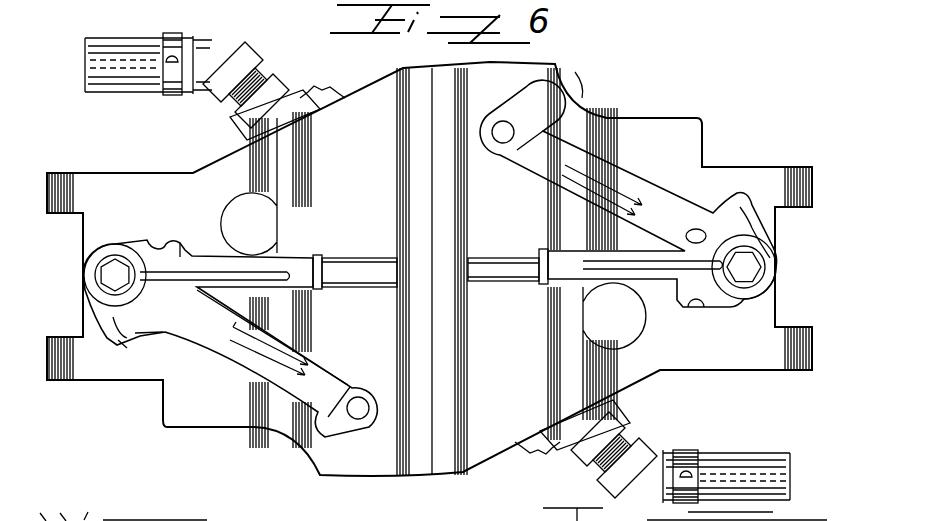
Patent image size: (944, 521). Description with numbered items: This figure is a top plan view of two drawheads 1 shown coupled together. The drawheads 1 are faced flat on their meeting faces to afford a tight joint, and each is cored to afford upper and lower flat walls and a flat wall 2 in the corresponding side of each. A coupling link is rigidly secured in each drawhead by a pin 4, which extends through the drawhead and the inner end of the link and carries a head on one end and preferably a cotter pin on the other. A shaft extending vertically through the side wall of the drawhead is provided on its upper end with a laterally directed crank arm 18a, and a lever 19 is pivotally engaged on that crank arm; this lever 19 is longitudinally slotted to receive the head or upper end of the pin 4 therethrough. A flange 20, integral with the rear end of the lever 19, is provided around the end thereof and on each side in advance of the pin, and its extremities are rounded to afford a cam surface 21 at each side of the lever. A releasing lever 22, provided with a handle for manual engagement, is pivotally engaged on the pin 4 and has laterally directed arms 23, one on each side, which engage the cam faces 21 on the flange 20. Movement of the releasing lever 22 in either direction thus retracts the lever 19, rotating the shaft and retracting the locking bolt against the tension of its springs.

The drawhead 1 is at (467, 80).
The flat wall 2 is at (580, 100).
The pin 4 is at (112, 278).
The lever 19 is at (222, 338).
The flange 20 is at (140, 235).
The cam surface 21 is at (165, 240).
The releasing lever 22 is at (200, 253).
The laterally directed arms 23 is at (195, 250).
The crank arm 18a is at (362, 422).